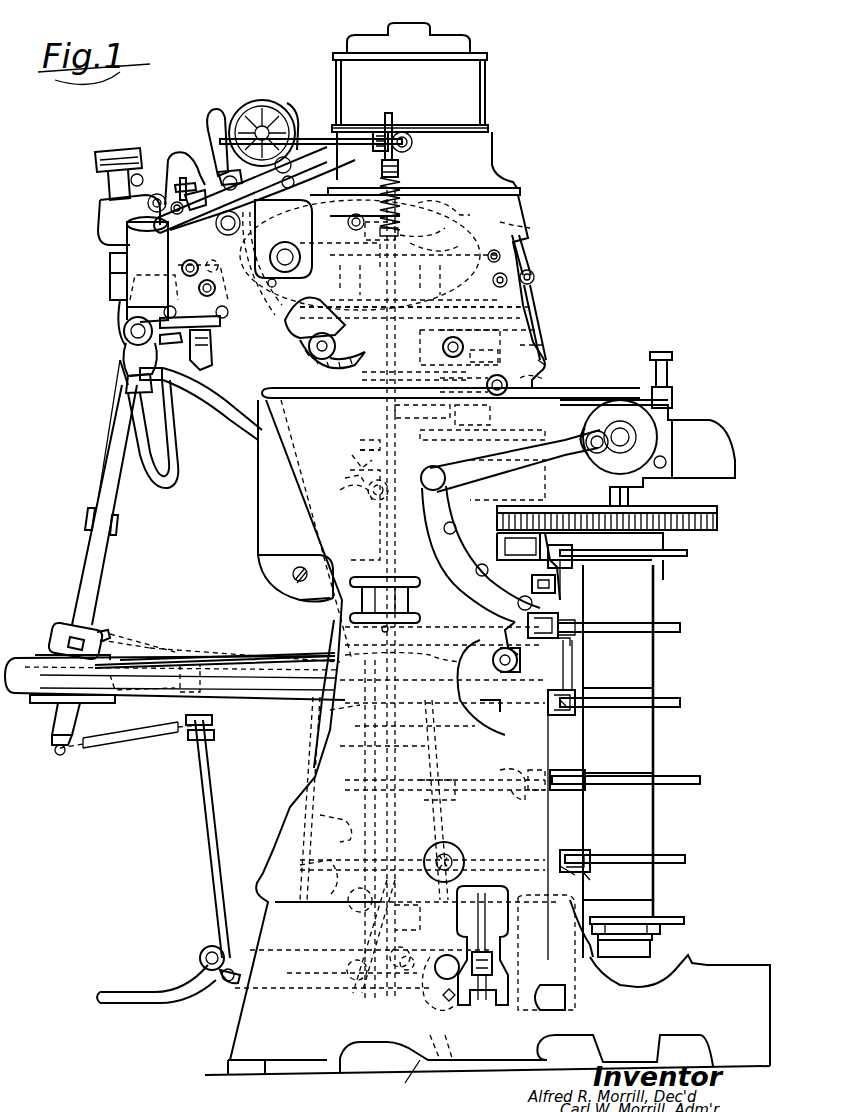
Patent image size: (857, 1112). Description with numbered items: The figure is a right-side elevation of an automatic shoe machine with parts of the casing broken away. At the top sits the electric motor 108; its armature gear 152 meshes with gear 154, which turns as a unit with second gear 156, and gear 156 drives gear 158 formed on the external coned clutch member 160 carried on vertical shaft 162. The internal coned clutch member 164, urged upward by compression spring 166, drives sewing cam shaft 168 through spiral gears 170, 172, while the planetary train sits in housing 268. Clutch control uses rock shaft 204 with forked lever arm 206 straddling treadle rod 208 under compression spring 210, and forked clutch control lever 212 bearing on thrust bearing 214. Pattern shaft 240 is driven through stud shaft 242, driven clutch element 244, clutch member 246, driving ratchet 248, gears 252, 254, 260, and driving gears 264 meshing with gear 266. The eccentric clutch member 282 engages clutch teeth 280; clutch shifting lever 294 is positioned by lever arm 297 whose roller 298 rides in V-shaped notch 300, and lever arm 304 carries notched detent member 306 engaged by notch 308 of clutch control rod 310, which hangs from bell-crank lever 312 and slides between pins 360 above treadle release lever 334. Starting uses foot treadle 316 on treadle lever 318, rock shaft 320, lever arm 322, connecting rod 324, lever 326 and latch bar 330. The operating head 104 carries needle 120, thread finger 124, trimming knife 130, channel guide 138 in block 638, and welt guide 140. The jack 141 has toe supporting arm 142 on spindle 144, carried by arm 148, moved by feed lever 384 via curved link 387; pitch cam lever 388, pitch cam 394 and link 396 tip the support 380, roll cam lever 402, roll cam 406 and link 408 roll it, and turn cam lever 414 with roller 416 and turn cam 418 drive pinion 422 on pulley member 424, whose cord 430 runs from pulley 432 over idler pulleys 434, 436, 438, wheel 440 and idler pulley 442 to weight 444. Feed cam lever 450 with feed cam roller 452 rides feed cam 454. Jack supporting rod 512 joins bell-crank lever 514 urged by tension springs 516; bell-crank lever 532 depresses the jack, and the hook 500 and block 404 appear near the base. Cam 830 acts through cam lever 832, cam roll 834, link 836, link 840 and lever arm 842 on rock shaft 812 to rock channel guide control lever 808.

The operating head 104 is at (524, 212).
The electric motor 108 is at (484, 92).
The curved hook needle 120 is at (192, 350).
The thread finger 124 is at (125, 315).
The rotary tubular inseam trimming knife 130 is at (124, 332).
The channel guide 138 is at (128, 345).
The welt guide 140 is at (125, 362).
The jack 141 is at (98, 407).
The toe supporting arm 142 is at (128, 382).
The spindle 144 is at (80, 578).
The forwardly extending arm 148 is at (265, 705).
The gear 152 is at (462, 196).
The gear 154 is at (530, 226).
The second gear 156 is at (534, 312).
The gear 158 is at (485, 296).
The external coned clutch member 160 is at (490, 280).
The vertical shaft 162 is at (335, 345).
The internal coned clutch member 164 is at (458, 247).
The compression spring 166 is at (450, 232).
The sewing cam shaft 168 is at (285, 250).
The spiral gear 170 is at (462, 205).
The spiral gear 172 is at (372, 150).
The rock shaft 204 is at (358, 215).
The forked lever arm 206 is at (398, 230).
The treadle rod 208 is at (393, 118).
The compression spring 210 is at (398, 165).
The forked clutch control lever 212 is at (382, 178).
The thrust bearing 214 is at (349, 223).
The pattern shaft 240 is at (655, 664).
The stud shaft 242 is at (350, 478).
The driven clutch element 244 is at (365, 384).
The clutch member 246 is at (358, 432).
The driving ratchet 248 is at (362, 452).
The gear 252 is at (355, 463).
The gear 254 is at (432, 505).
The gear 260 is at (585, 455).
The driving gears 264 is at (600, 498).
The gear 266 is at (705, 510).
The housing 268 is at (540, 332).
The ratchet-shaped clutch teeth 280 is at (461, 345).
The eccentric and reverse driving clutch member 282 is at (474, 356).
The clutch shifting lever 294 is at (396, 376).
The lever arm 297 is at (478, 428).
The roller 298 is at (452, 388).
The V-shaped notch 300 is at (425, 422).
The lever arm 304 is at (540, 348).
The notched detent member 306 is at (545, 365).
The notch 308 is at (540, 384).
The clutch control rod 310 is at (534, 298).
The bell-crank lever 312 is at (530, 272).
The foot treadle 316 is at (134, 992).
The treadle lever 318 is at (200, 950).
The rock shaft 320 is at (440, 975).
The lever arm 322 is at (455, 935).
The connecting rod 324 is at (415, 918).
The lever 326 is at (408, 598).
The latch bar 330 is at (515, 440).
The treadle release lever 334 is at (584, 434).
The pins 360 is at (600, 388).
The support 380 is at (438, 755).
The feed lever 384 is at (235, 420).
The curved link 387 is at (168, 486).
The pitch cam lever 388 is at (588, 876).
The pitch cam 394 is at (600, 853).
The link 396 is at (585, 844).
The roll cam lever 402 is at (510, 795).
The block 404 is at (540, 800).
The roll cam 406 is at (644, 782).
The link 408 is at (465, 796).
The turn cam lever 414 is at (505, 710).
The roller 416 is at (576, 715).
The turn cam 418 is at (670, 710).
The pinion 422 is at (352, 736).
The cone-shaped pulley member 424 is at (352, 826).
The cord 430 is at (256, 668).
The pulley 432 is at (352, 860).
The idler pulley 434 is at (445, 845).
The idler pulley 436 is at (432, 728).
The idler pulley 438 is at (420, 665).
The wheel 440 is at (36, 666).
The idler pulley 442 is at (500, 676).
The weight 444 is at (592, 918).
The feed cam lever 450 is at (538, 542).
The feed cam roller 452 is at (574, 562).
The feed cam 454 is at (665, 558).
The hook 500 is at (322, 600).
The jack supporting rod 512 is at (210, 812).
The bell-crank lever 514 is at (224, 985).
The tension springs 516 is at (424, 1067).
The bell-crank lever 532 is at (368, 498).
The block 638 is at (110, 265).
The channel guide control lever 808 is at (186, 262).
The rock shaft 812 is at (199, 290).
The cam 830 is at (676, 626).
The cam lever 832 is at (575, 642).
The cam roll 834 is at (556, 624).
The link 836 is at (504, 620).
The link 840 is at (293, 576).
The lever arm 842 is at (224, 259).